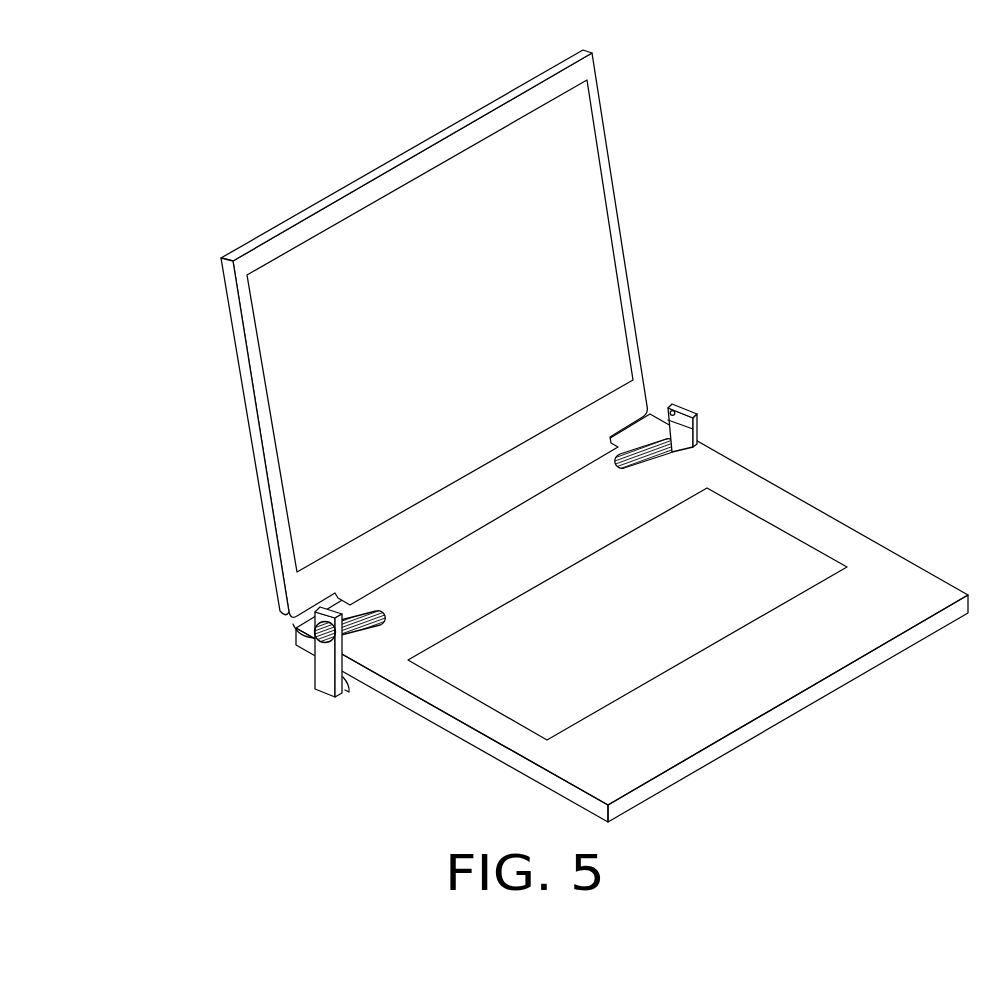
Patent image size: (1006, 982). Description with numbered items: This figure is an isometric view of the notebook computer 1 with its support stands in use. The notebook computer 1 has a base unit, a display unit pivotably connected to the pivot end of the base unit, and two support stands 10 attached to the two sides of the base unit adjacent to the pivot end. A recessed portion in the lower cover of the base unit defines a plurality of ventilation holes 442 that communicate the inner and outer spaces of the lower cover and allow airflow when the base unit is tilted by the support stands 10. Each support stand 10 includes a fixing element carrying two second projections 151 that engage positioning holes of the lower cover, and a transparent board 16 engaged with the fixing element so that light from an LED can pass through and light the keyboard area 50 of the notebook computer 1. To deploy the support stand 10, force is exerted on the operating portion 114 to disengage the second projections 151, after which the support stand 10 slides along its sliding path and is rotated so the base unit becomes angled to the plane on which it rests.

The notebook computer 1 is at (550, 433).
The support stand 10 is at (489, 539).
The transparent board 16 is at (687, 432).
The keyboard area 50 is at (740, 575).
The operating portion 114 is at (325, 632).
The second projection 151 is at (686, 420).
The ventilation hole 442 is at (359, 623).